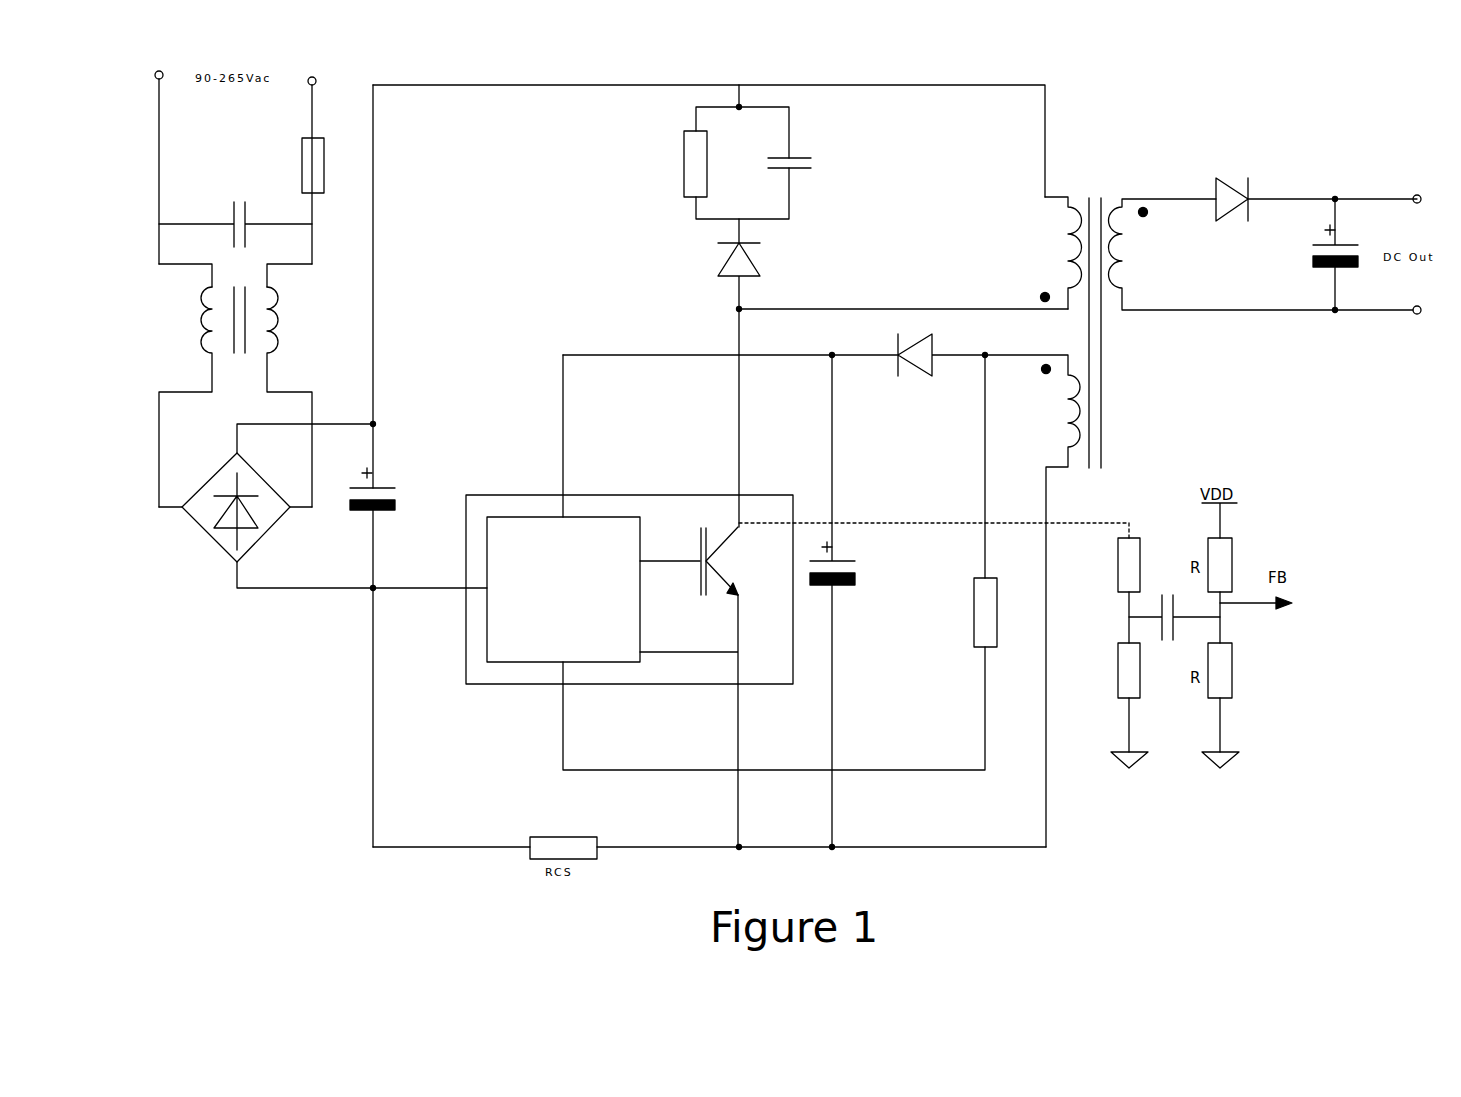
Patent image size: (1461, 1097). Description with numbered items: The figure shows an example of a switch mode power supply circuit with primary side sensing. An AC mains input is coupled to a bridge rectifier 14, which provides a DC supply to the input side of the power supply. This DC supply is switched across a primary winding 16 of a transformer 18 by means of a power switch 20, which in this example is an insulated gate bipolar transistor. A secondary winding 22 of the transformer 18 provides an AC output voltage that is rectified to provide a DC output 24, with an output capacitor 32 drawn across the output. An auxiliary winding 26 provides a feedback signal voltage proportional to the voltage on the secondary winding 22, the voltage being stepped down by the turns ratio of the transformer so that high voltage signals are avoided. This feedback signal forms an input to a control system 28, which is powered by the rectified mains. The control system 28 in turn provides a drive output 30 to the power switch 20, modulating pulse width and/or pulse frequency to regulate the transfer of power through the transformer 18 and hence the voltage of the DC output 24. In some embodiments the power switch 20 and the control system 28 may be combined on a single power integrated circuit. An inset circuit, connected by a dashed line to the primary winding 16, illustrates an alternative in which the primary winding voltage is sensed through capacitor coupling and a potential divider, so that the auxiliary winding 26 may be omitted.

The bridge rectifier 14 is at (214, 541).
The primary winding 16 is at (1053, 200).
The transformer 18 is at (1160, 479).
The power switch 20 is at (746, 569).
The secondary winding 22 is at (1148, 198).
The DC output 24 is at (1397, 180).
The auxiliary winding 26 is at (1055, 468).
The control system 28 is at (508, 663).
The drive output 30 is at (663, 561).
The output capacitor 32 is at (1350, 267).